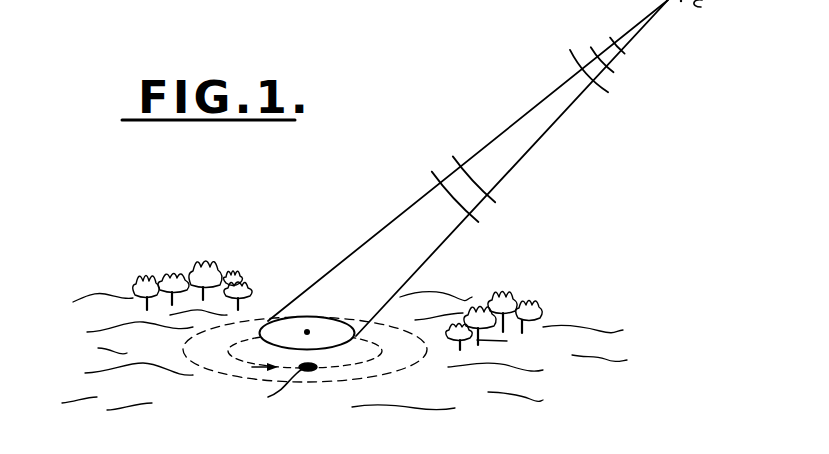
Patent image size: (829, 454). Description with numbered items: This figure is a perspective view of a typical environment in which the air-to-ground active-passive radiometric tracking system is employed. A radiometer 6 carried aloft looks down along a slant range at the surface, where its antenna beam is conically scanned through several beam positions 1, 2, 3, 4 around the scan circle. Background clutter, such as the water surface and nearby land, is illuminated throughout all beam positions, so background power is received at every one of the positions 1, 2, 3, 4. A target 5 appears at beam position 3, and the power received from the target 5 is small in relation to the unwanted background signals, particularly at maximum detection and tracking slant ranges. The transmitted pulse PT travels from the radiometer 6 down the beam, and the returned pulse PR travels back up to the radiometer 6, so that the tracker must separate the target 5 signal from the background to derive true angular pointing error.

The conical scan beam position 1 is at (307, 316).
The conical scan beam position 2 is at (344, 351).
The conical scan beam position 3 is at (249, 390).
The conical scan beam position 4 is at (491, 327).
The target 5 is at (317, 366).
The radiometer 6 is at (491, 168).
The transmitted pulse PT is at (610, 65).
The received pulse PR is at (475, 197).